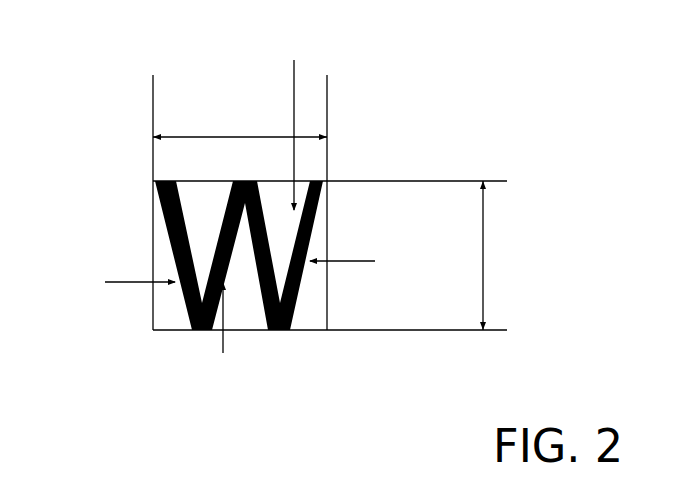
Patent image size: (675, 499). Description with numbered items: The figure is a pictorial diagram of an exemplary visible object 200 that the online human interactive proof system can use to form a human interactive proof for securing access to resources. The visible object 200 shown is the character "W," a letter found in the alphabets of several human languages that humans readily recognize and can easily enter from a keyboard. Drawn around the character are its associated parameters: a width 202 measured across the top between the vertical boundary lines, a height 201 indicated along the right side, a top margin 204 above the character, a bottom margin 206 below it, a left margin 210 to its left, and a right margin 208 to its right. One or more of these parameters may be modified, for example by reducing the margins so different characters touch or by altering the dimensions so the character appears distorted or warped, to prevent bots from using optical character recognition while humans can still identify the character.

The visible object 200 is at (618, 80).
The height 201 is at (467, 210).
The width 202 is at (208, 108).
The top margin 204 is at (367, 35).
The bottom margin 206 is at (367, 369).
The right margin 208 is at (466, 270).
The left margin 210 is at (37, 248).